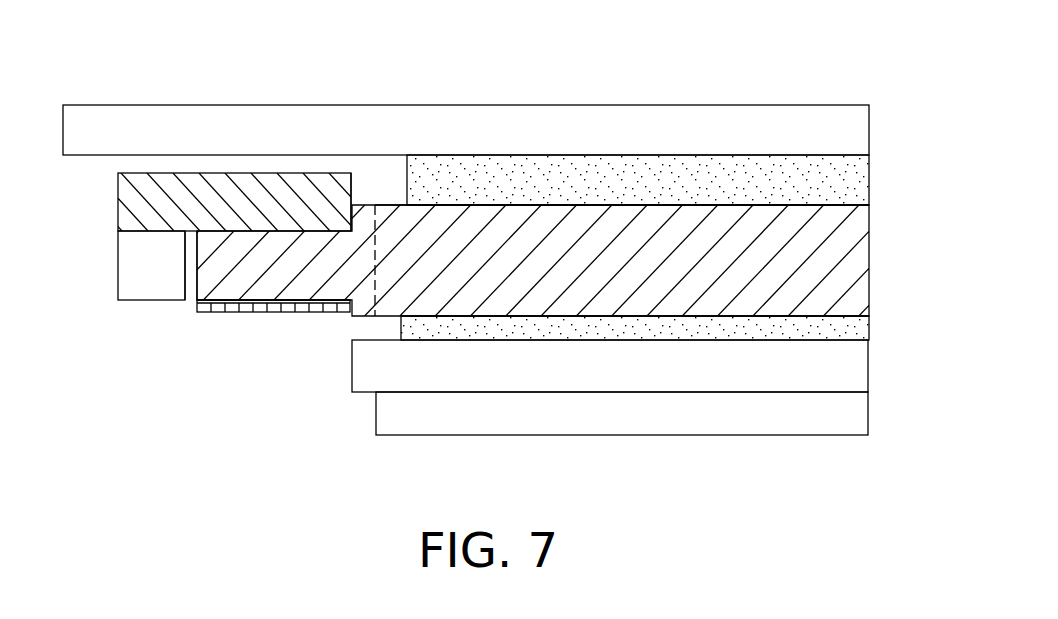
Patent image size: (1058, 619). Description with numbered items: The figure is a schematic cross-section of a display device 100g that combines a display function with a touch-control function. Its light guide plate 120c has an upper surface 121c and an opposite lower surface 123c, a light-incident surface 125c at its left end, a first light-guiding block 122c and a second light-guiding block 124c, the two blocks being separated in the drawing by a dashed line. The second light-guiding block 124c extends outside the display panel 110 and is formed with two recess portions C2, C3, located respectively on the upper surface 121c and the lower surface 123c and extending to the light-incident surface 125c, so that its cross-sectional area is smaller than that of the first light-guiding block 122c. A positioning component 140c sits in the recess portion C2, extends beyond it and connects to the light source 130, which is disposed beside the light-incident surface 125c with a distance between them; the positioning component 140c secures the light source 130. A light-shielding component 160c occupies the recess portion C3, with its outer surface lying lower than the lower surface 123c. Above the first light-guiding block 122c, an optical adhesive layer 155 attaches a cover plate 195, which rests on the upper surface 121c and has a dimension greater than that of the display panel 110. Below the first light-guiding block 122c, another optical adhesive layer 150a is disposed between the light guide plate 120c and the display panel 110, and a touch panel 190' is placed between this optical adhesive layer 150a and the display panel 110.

The cover plate 195 is at (845, 125).
The optical adhesive layer 155 is at (842, 169).
The positioning component 140c is at (153, 193).
The light source 130 is at (146, 280).
The light guide plate 120c is at (470, 55).
The second light-guiding block 124c is at (363, 225).
The first light-guiding block 122c is at (477, 217).
The upper surface 121c is at (825, 197).
The recess portion C2 is at (300, 210).
The light-incident surface 125c is at (189, 262).
The light-shielding component 160c is at (257, 303).
The recess portion C3 is at (302, 302).
The optical adhesive layer 150a is at (472, 327).
The lower surface 123c is at (815, 318).
The touch panel 190' is at (651, 366).
The display panel 110 is at (853, 410).
The display device 100g is at (833, 470).